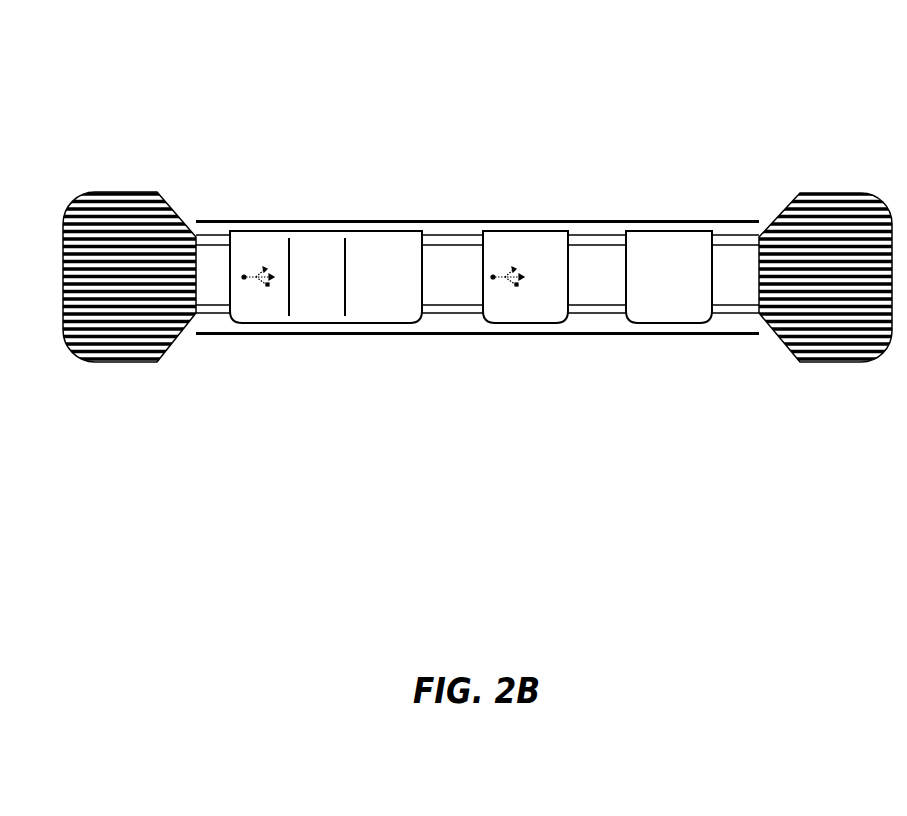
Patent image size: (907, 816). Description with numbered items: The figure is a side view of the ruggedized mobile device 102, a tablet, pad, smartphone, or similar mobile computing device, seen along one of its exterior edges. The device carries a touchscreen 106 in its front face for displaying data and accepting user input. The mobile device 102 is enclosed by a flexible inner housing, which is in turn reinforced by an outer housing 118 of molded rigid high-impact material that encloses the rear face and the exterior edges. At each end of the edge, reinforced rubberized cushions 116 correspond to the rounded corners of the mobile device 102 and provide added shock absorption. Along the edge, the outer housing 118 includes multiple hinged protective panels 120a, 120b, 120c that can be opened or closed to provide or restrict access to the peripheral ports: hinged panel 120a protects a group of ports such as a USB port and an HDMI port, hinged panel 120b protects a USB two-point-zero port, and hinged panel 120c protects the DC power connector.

The mobile device 102 is at (477, 228).
The touchscreen 106 is at (695, 217).
The reinforced rubberized cushions 116 is at (112, 333).
The outer housing 118 is at (455, 323).
The hinged panel 120a is at (325, 228).
The hinged panel 120b is at (525, 228).
The hinged panel 120c is at (668, 323).